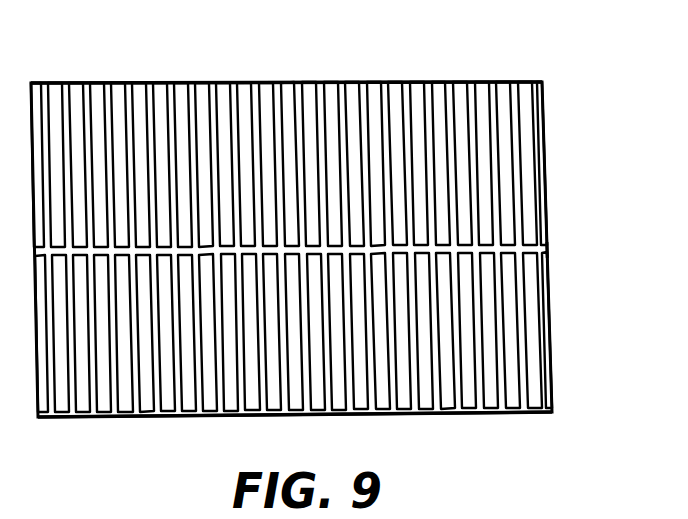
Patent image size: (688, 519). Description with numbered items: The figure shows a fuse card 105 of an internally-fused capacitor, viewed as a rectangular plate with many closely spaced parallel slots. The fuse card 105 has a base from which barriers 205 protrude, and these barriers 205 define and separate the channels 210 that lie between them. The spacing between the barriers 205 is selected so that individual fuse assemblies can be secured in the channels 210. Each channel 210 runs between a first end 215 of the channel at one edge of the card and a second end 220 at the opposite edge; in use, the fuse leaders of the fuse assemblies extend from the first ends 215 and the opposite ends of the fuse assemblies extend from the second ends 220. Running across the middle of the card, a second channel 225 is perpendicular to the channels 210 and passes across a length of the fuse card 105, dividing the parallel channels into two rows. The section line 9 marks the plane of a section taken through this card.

The fuse card 105 is at (532, 53).
The barriers 205 is at (480, 81).
The channels 210 is at (447, 82).
The first ends of the channels 215 is at (375, 415).
The second ends of the channels 220 is at (312, 82).
The second channel 225 is at (540, 247).
The section line 9- 9 is at (583, 248).